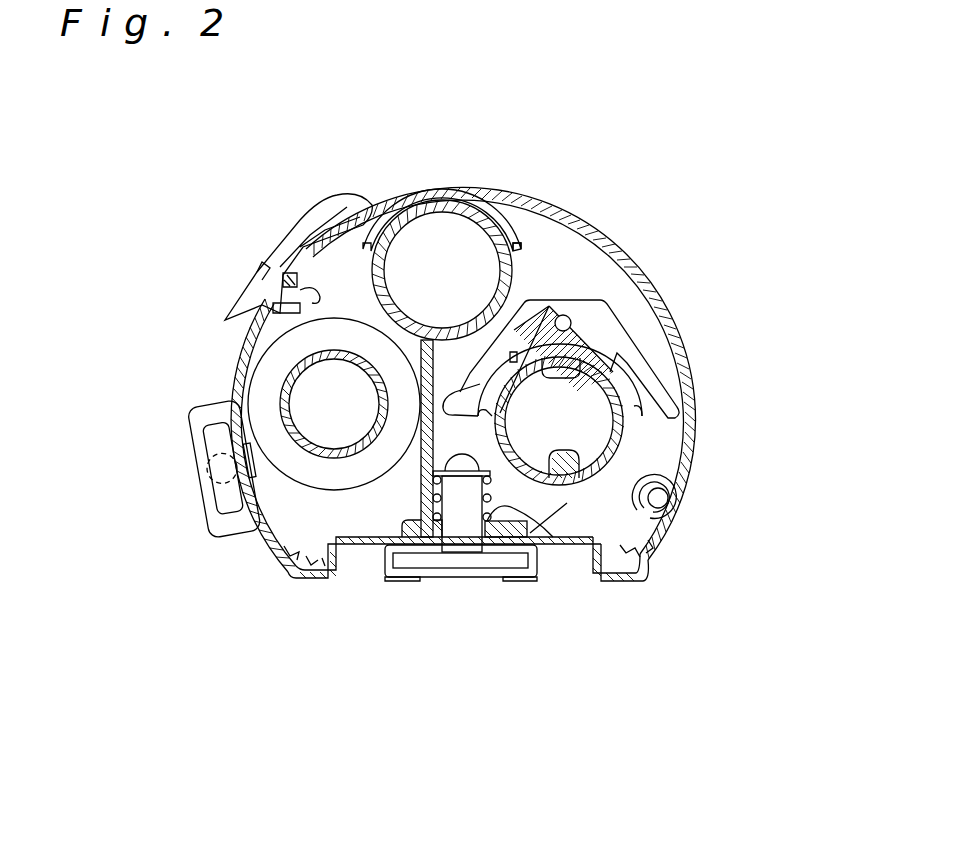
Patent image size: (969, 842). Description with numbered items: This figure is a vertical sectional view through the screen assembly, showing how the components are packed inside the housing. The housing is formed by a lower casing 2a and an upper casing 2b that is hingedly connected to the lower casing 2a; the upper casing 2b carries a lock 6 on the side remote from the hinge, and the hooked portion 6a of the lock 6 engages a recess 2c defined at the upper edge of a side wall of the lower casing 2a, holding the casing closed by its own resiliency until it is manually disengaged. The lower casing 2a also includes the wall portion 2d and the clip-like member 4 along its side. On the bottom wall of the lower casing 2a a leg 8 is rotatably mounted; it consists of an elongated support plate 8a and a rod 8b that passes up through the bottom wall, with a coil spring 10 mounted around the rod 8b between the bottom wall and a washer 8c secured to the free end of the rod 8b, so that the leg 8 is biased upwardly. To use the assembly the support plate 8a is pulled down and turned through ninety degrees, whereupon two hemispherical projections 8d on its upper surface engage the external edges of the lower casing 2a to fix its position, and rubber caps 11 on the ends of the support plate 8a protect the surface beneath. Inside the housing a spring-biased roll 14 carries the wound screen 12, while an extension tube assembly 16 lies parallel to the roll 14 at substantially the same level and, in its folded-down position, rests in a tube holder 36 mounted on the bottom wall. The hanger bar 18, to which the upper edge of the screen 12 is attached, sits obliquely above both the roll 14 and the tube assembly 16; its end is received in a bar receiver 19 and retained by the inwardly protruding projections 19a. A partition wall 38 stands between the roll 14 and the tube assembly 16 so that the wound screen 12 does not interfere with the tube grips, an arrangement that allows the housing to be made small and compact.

The lower casing 2a is at (653, 550).
The upper casing 2b is at (680, 337).
The recess 2c is at (256, 282).
The housing lower left wall 2d is at (353, 562).
The clip 4 is at (213, 507).
The lock 6 is at (250, 270).
The hooked portion 6a is at (268, 300).
The leg 8 is at (517, 572).
The support plate 8a is at (460, 513).
The rod 8b is at (388, 562).
The washer 8c is at (472, 474).
The hemispherical projections 8d is at (460, 548).
The coil spring 10 is at (530, 533).
The rubber cap 11 is at (540, 580).
The screen 12 is at (263, 377).
The spring-biased roll 14 is at (423, 463).
The extension tube assembly 16 is at (587, 347).
The hanger bar 18 is at (447, 208).
The bar receiver 19 is at (528, 282).
The projections 19a is at (512, 243).
The tube holder 36 is at (627, 577).
The partition wall 38 is at (310, 447).